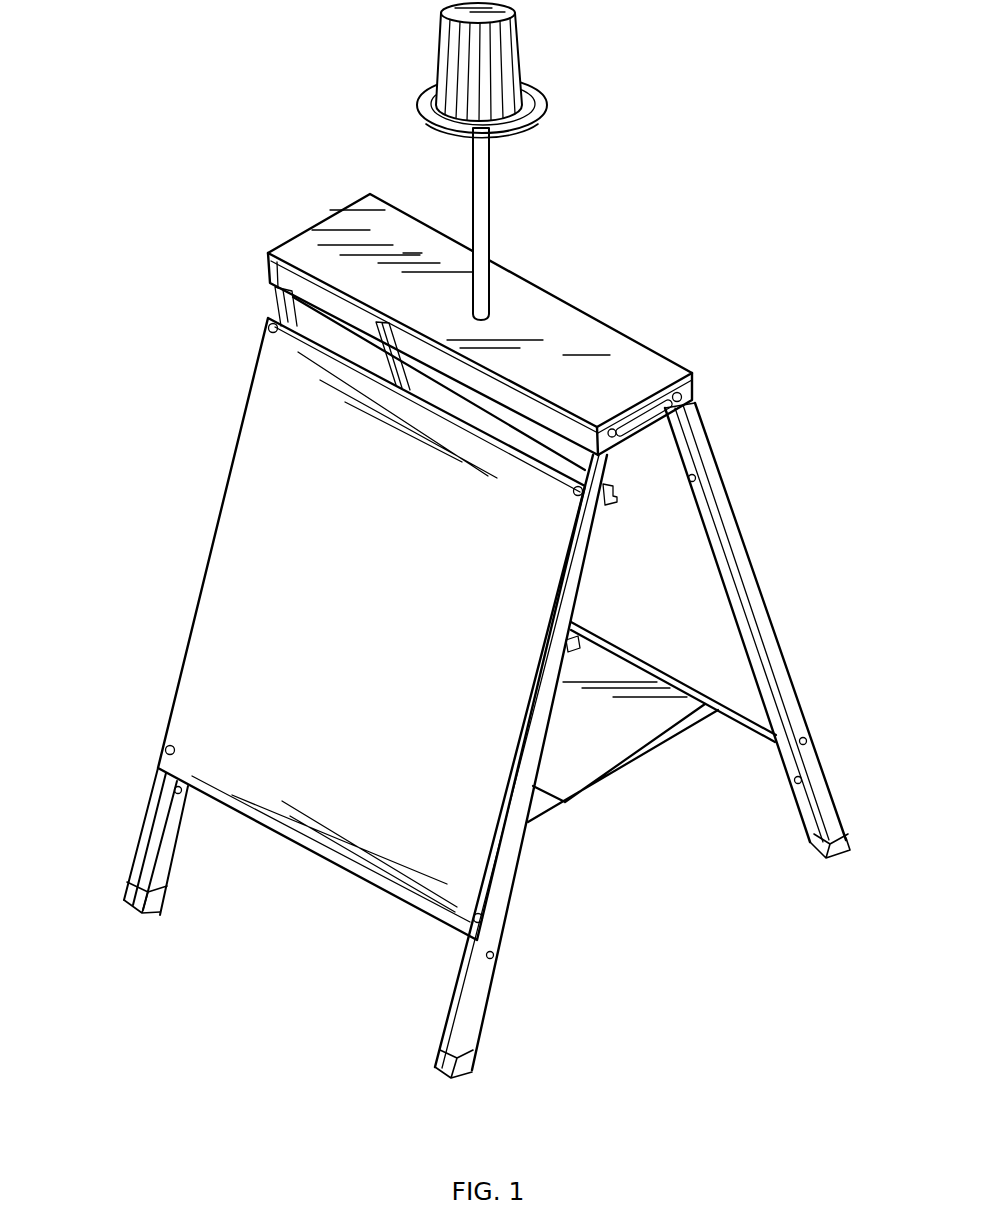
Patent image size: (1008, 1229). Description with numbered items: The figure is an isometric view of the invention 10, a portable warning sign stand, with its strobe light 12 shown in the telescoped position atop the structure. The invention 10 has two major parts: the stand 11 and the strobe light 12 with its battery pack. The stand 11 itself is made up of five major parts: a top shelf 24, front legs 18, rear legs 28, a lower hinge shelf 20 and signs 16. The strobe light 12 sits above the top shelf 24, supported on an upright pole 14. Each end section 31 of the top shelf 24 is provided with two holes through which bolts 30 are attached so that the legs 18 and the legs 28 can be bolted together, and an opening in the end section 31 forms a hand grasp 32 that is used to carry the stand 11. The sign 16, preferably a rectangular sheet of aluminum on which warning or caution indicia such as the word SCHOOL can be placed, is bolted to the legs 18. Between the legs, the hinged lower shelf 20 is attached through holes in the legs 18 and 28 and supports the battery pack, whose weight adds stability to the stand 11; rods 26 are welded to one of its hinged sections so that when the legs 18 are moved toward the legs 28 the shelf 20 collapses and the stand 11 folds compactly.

The invention 10 is at (771, 247).
The stand 11 is at (152, 560).
The strobe light 12 is at (505, 75).
The light support pole 14 is at (492, 223).
The sign 16 is at (215, 713).
The legs 18 is at (480, 1002).
The lower hinge shelf 20 is at (586, 720).
The top shelf 24 is at (645, 348).
The rods 26 is at (656, 738).
The legs 28 is at (776, 660).
The bolts 30 is at (693, 407).
The end section 31 is at (697, 389).
The hand grasp 32 is at (643, 428).